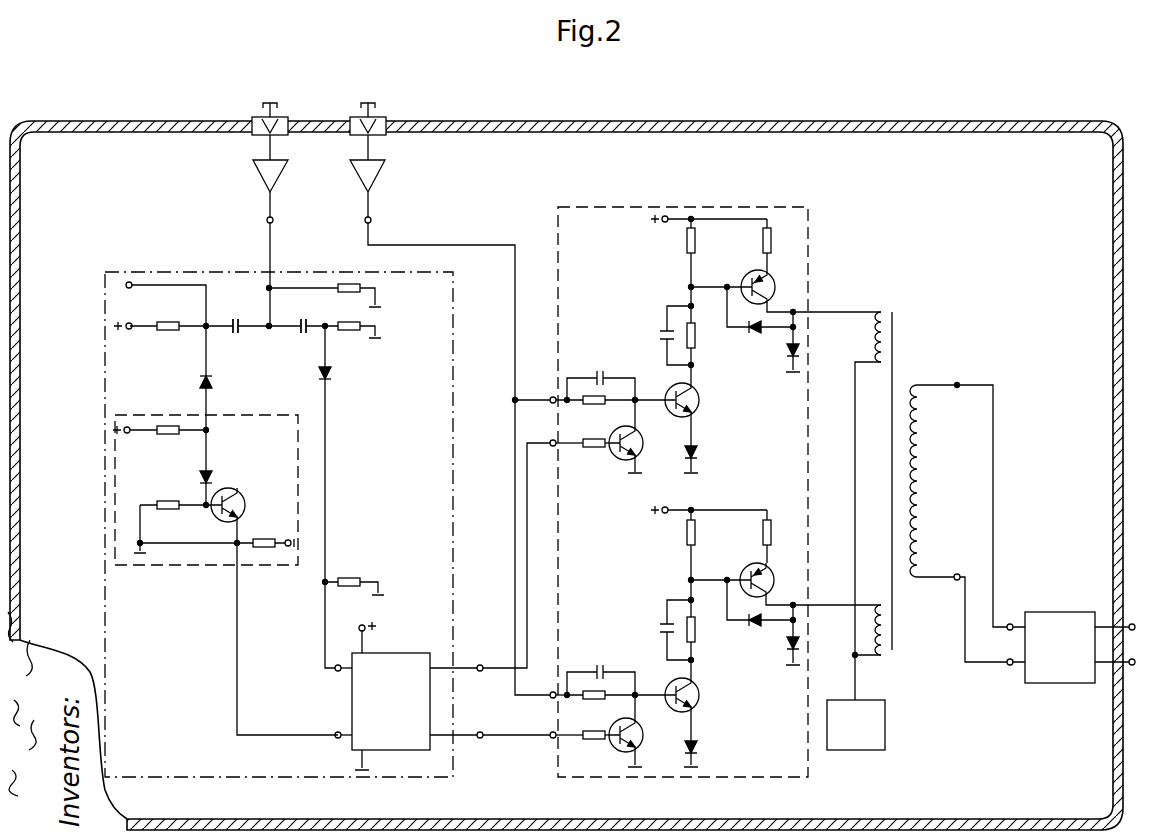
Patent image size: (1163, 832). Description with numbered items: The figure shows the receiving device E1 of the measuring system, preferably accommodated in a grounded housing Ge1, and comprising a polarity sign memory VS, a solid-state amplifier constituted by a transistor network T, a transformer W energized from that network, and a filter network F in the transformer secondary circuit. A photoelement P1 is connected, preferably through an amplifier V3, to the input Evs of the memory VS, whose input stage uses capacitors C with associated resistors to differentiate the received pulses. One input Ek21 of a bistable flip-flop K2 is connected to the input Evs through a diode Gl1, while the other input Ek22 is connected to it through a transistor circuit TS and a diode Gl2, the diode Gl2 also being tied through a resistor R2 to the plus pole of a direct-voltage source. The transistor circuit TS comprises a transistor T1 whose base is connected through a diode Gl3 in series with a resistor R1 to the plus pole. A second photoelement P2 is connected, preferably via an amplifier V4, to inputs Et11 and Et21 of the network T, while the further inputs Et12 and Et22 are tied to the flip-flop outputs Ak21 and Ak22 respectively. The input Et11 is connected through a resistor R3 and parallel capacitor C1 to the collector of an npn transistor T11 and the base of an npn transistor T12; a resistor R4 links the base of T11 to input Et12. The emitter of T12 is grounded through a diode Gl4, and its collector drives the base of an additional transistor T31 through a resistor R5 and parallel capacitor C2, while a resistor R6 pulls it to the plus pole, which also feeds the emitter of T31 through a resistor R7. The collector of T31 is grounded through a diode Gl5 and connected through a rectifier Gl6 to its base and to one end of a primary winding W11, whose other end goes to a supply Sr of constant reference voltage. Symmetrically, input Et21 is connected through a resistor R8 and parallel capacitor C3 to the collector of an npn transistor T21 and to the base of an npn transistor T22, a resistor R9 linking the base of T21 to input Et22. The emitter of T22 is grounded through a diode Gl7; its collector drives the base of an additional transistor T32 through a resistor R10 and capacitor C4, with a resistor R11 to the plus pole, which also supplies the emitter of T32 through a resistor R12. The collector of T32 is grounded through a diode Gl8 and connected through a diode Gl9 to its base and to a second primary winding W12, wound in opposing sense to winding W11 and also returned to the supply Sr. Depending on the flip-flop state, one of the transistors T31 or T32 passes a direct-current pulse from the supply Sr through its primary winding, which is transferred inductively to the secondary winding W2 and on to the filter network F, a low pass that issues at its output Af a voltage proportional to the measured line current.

The grounded housing Ge1 is at (998, 128).
The receiving device E1 is at (866, 114).
The photoelement P1 is at (283, 120).
The amplifier V3 is at (268, 168).
The input of the sign memory Evs is at (283, 259).
The second photoelement P2 is at (385, 119).
The amplifier V4 is at (358, 168).
The polarity sign memory VS is at (119, 273).
The transistor circuit TS is at (244, 417).
The resistor R2 is at (168, 339).
The capacitors C is at (267, 316).
The diode Gl2 is at (210, 385).
The resistor R1 is at (159, 444).
The diode Gl3 is at (210, 478).
The transistor T1 is at (245, 503).
The diode Gl1 is at (330, 377).
The input of the bistable flip-flop Ek21 is at (336, 671).
The input of the bistable flip-flop Ek22 is at (336, 738).
The bistable flip-flop K2 is at (391, 696).
The output of the bistable flip-flop Ak21 is at (478, 665).
The output of the bistable flip-flop Ak22 is at (478, 740).
The transistor network T is at (736, 207).
The input of the transistor circuit Et11 is at (551, 397).
The input of the transistor amplifier network Et12 is at (551, 440).
The input of the amplifying transistor network Et21 is at (551, 692).
The input of the amplifying transistor network Et22 is at (550, 732).
The resistor R3 is at (597, 407).
The resistor R4 is at (597, 450).
The capacitor C1 is at (601, 373).
The npn transistor T11 is at (641, 452).
The npn transistor T12 is at (699, 401).
The diode Gl4 is at (698, 452).
The resistor R5 is at (702, 338).
The resistor R6 is at (702, 243).
The resistor R7 is at (778, 243).
The capacitor C2 is at (665, 337).
The additional transistor T31 is at (774, 284).
The rectifier Gl6 is at (760, 326).
The diode Gl5 is at (790, 348).
The resistor R8 is at (597, 702).
The resistor R9 is at (597, 742).
The capacitor C3 is at (601, 668).
The npn transistor T21 is at (642, 733).
The npn transistor T22 is at (699, 695).
The diode Gl7 is at (698, 747).
The resistor R10 is at (705, 632).
The resistor R11 is at (705, 535).
The resistor R12 is at (782, 535).
The capacitor C4 is at (664, 627).
The additional transistor T32 is at (773, 576).
The diode Gl9 is at (760, 619).
The diode Gl8 is at (788, 648).
The transformer W is at (906, 495).
The primary winding W11 is at (875, 313).
The second primary winding W12 is at (883, 661).
The secondary winding W2 is at (935, 481).
The supply of constant reference voltage Sr is at (856, 725).
The filter network F is at (1054, 647).
The output of the filter network Af is at (1135, 630).